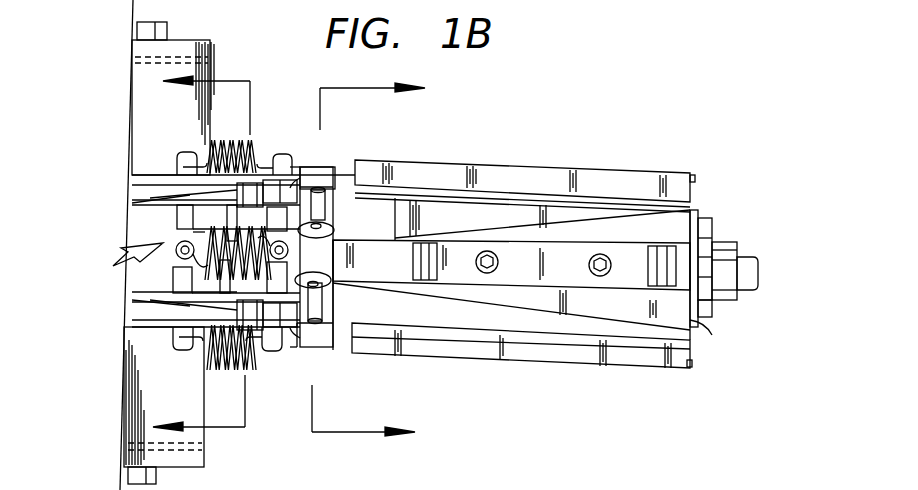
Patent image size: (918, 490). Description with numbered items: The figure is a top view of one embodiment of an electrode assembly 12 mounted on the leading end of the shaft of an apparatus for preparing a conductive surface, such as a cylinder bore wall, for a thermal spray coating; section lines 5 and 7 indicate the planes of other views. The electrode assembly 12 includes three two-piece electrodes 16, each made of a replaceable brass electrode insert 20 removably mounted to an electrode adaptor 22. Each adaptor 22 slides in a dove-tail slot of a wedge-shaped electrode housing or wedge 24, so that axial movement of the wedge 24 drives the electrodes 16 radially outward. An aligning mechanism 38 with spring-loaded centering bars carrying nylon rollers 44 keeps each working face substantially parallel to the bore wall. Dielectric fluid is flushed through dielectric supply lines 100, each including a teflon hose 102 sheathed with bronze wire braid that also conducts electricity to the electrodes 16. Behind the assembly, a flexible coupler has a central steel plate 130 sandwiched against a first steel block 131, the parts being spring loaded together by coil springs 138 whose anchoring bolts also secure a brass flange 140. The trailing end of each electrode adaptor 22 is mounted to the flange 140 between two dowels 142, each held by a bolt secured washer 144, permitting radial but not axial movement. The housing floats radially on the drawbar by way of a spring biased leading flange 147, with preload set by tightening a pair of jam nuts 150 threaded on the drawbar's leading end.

The section line 5- 5 is at (358, 260).
The section line 7- 7 is at (211, 256).
The electrode assembly 12 is at (712, 155).
The electrode 16 is at (698, 195).
The electrode insert 20 is at (600, 172).
The electrode adaptor 22 is at (308, 168).
The wedge 24 is at (690, 330).
The aligning mechanism 38 is at (520, 237).
The roller 44 is at (430, 240).
The dielectric supply line 100 is at (155, 178).
The teflon hose 102 is at (140, 205).
The central steel plate 130 is at (215, 296).
The first steel block 131 is at (208, 232).
The coil spring 138 is at (256, 142).
The brass flange 140 is at (330, 178).
The dowel 142 is at (325, 206).
The washer 144 is at (334, 228).
The leading flange 147 is at (690, 325).
The jam nuts 150 is at (725, 262).